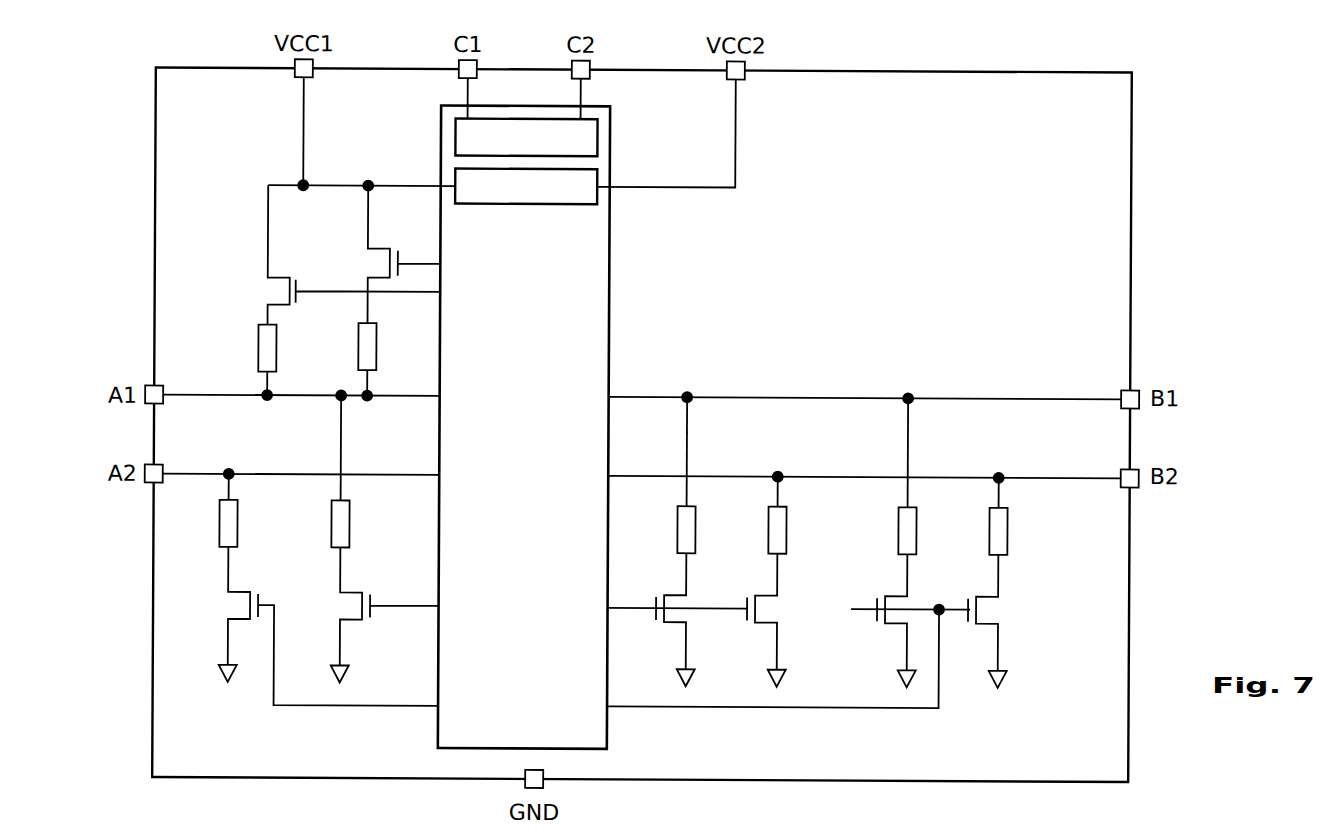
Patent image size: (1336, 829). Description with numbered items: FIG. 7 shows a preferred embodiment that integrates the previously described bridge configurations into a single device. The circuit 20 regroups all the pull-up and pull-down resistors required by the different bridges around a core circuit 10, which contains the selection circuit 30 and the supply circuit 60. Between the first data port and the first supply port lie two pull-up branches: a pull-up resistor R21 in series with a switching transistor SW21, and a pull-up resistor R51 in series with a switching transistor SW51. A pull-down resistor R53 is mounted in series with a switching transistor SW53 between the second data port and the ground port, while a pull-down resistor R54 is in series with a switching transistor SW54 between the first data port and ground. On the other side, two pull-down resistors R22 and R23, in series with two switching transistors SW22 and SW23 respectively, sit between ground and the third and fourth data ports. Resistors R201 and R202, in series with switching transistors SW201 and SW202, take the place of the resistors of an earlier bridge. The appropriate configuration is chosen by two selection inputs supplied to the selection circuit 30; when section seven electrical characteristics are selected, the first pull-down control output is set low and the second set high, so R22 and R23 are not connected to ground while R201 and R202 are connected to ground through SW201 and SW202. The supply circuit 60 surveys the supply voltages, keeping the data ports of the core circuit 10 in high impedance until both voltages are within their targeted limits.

The core circuit 10 is at (524, 426).
The circuit 20 is at (642, 425).
The selection circuit 30 is at (526, 138).
The supply circuit 60 is at (526, 187).
The switching transistor SW51 is at (321, 255).
The pull-up resistor R51 is at (242, 362).
The switching transistor SW21 is at (371, 254).
The pull-up resistor R21 is at (342, 362).
The pull-down resistor R53 is at (205, 508).
The switching transistor SW53 is at (302, 626).
The pull-down resistor R54 is at (364, 468).
The switching transistor SW54 is at (385, 615).
The pull-down resistor R22 is at (662, 472).
The switching transistor SW22 is at (654, 619).
The pull-down resistor R23 is at (753, 512).
The switching transistor SW23 is at (745, 619).
The resistor R201 is at (878, 473).
The switching transistor SW201 is at (869, 620).
The resistor R202 is at (1031, 514).
The switching transistor SW202 is at (1025, 622).